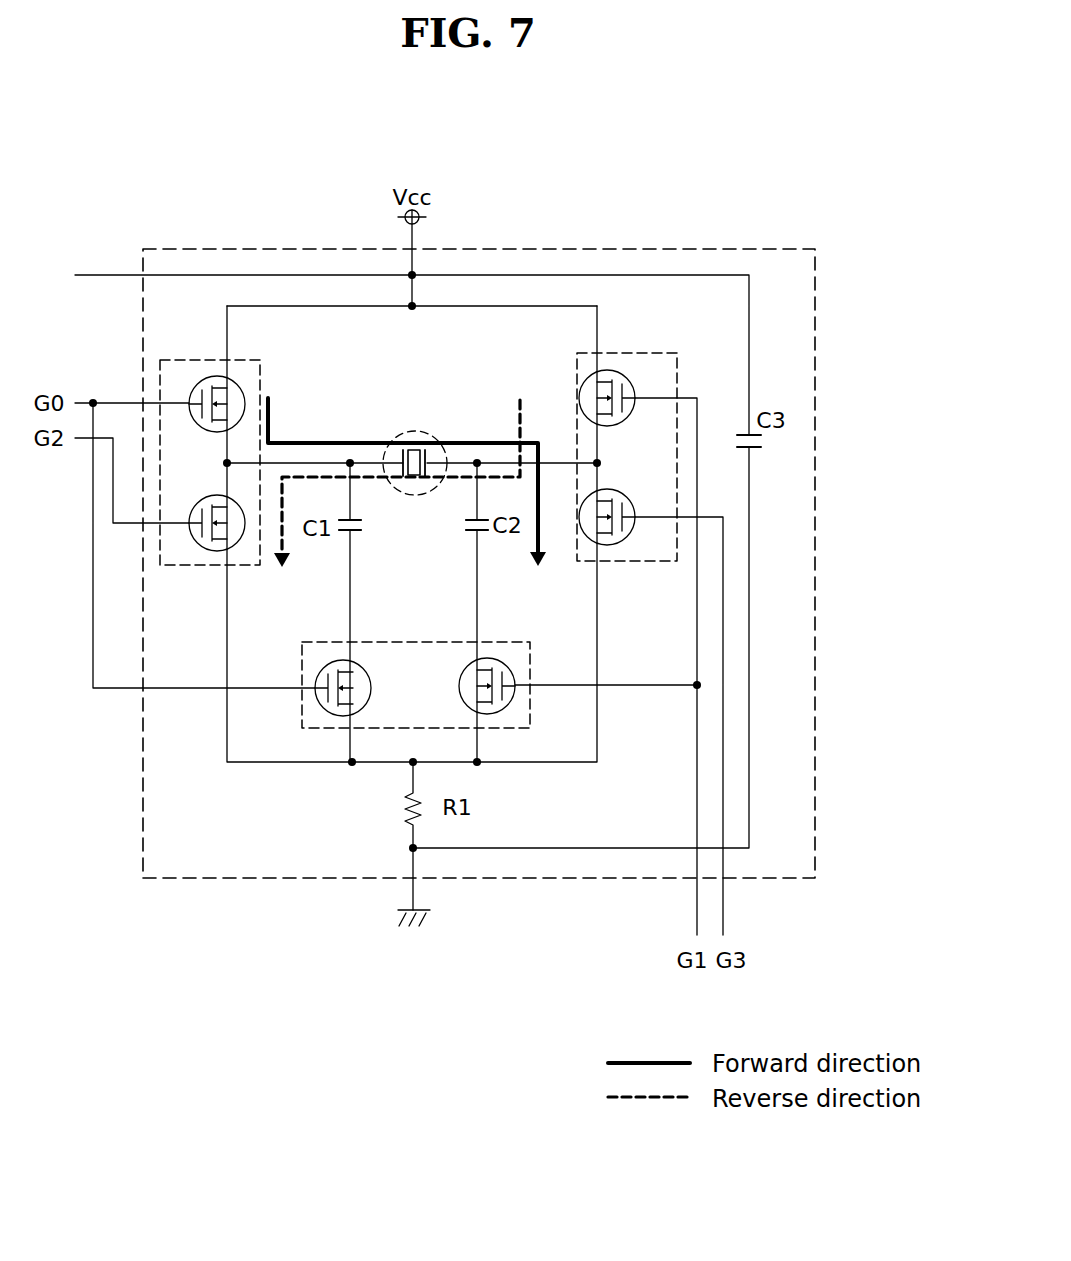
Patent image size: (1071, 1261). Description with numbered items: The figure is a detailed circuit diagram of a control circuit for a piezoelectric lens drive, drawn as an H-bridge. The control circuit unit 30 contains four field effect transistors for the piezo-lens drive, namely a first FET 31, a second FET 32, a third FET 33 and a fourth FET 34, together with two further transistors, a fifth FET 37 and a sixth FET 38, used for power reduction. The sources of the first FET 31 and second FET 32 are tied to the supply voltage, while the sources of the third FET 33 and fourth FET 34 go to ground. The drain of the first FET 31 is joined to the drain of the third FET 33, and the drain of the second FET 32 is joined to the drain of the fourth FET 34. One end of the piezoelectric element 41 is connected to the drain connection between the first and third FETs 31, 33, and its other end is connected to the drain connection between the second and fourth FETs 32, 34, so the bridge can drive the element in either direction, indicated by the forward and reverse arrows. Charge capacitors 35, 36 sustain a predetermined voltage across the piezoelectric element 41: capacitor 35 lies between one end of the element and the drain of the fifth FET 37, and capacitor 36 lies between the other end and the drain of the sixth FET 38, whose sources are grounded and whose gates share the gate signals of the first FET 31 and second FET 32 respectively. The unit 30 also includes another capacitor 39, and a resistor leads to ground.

The control circuit unit 30 is at (815, 249).
The first FET 31 is at (204, 377).
The second FET 32 is at (622, 375).
The third FET 33 is at (218, 550).
The fourth FET 34 is at (620, 545).
The charge capacitor 35 is at (365, 528).
The charge capacitor 36 is at (468, 528).
The fifth FET 37 is at (318, 674).
The sixth FET 38 is at (513, 665).
The capacitor 39 is at (757, 452).
The piezoelectric element 41 is at (438, 438).